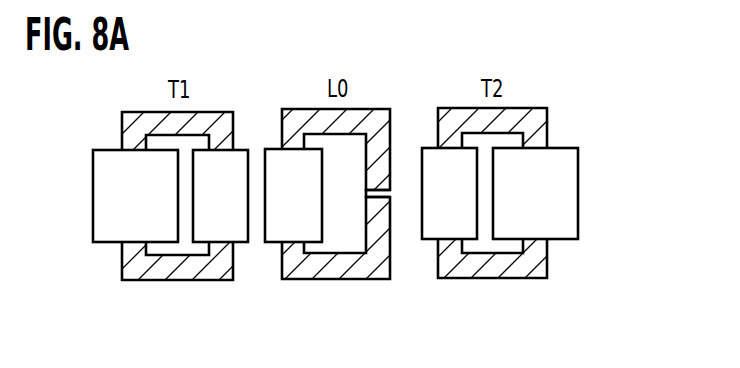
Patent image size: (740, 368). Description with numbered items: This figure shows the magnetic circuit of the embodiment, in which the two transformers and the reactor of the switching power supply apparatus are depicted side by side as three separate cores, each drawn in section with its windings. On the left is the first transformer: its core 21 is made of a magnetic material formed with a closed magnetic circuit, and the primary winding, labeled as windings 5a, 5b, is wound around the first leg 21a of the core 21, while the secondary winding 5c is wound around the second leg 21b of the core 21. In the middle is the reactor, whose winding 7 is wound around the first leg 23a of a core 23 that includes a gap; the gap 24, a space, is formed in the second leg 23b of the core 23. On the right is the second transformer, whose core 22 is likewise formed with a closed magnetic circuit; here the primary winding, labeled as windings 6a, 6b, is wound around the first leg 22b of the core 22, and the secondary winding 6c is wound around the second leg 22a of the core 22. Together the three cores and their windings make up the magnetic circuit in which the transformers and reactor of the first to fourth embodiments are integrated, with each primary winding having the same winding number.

The core 21 is at (151, 208).
The first leg 21a is at (122, 146).
The second leg 21b is at (233, 145).
The primary winding np1 of transformer T1 5a is at (123, 234).
The primary winding np2 of transformer T1 5b is at (107, 242).
The secondary winding 5c is at (242, 242).
The core 23 is at (336, 192).
The first leg 23a is at (282, 145).
The second leg 23b is at (390, 145).
The gap 24 is at (392, 196).
The winding 7 is at (322, 192).
The core 22 is at (519, 192).
The second leg 22a is at (438, 145).
The first leg 22b is at (547, 138).
The primary winding np1 of transformer T2 6a is at (583, 193).
The primary winding np2 of transformer T2 6b is at (578, 190).
The secondary winding 6c is at (423, 240).